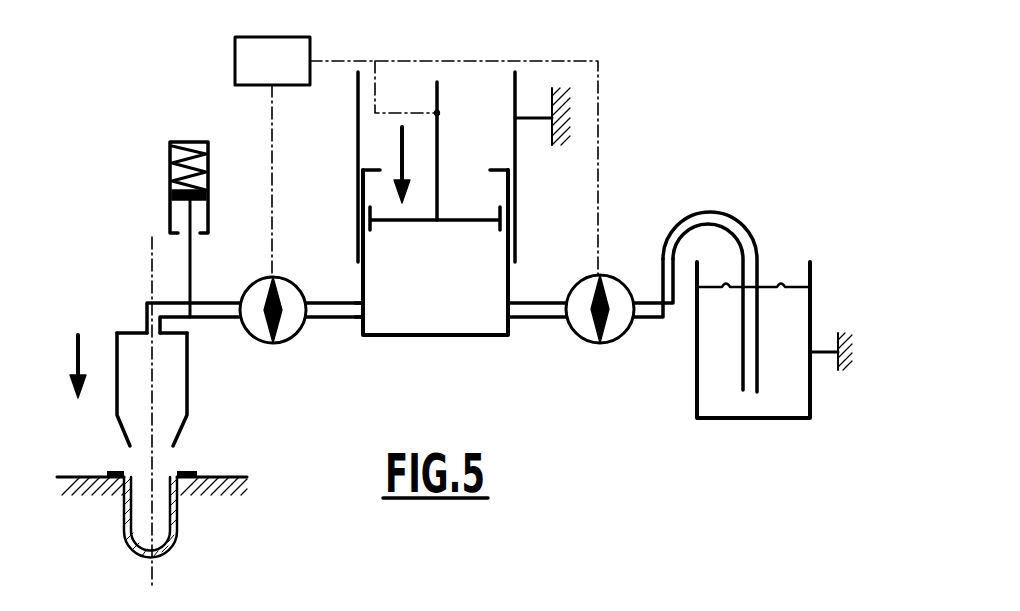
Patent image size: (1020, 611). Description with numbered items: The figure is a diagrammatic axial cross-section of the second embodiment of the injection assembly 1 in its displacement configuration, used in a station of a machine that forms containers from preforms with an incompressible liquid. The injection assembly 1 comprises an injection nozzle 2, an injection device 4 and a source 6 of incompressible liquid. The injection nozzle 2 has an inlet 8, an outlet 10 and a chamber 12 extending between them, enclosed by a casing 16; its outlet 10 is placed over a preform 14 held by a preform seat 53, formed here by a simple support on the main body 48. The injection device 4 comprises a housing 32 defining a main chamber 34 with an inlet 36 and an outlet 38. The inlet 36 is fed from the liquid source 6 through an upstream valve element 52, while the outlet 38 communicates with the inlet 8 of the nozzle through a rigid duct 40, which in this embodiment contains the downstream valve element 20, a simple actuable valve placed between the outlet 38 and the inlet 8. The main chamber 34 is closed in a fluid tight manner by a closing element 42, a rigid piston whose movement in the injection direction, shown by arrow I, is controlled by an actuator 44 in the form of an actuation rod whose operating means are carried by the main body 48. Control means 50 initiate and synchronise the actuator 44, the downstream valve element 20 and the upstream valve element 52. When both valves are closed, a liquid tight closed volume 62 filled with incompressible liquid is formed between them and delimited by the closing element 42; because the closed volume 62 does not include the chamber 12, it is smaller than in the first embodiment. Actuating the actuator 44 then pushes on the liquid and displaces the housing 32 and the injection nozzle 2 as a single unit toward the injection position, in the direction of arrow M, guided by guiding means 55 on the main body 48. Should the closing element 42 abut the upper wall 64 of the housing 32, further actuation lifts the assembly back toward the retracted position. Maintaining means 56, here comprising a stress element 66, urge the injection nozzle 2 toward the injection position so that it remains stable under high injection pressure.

The injection assembly 1 is at (200, 105).
The injection nozzle 2 is at (130, 402).
The injection device 4 is at (428, 323).
The source of incompressible liquid 6 is at (778, 410).
The inlet 8 is at (226, 316).
The outlet 10 is at (137, 441).
The chamber 12 is at (187, 389).
The preform 14 is at (143, 525).
The casing 16 is at (114, 335).
The downstream valve element 20 is at (290, 333).
The housing 32 is at (510, 290).
The main chamber 34 is at (378, 252).
The inlet 36 is at (512, 318).
The outlet 38 is at (363, 318).
The rigid duct 40 is at (328, 320).
The closing element 42 is at (473, 218).
The actuator 44 is at (437, 101).
The main body 48 is at (358, 111).
The control means 50 is at (416, 157).
The upstream valve element 52 is at (582, 330).
The preform seat 53 is at (217, 493).
The guiding means 55 is at (516, 76).
The maintaining means 56 is at (208, 211).
The closed volume 62 is at (467, 312).
The upper wall 64 is at (374, 174).
The stress element 66 is at (170, 177).